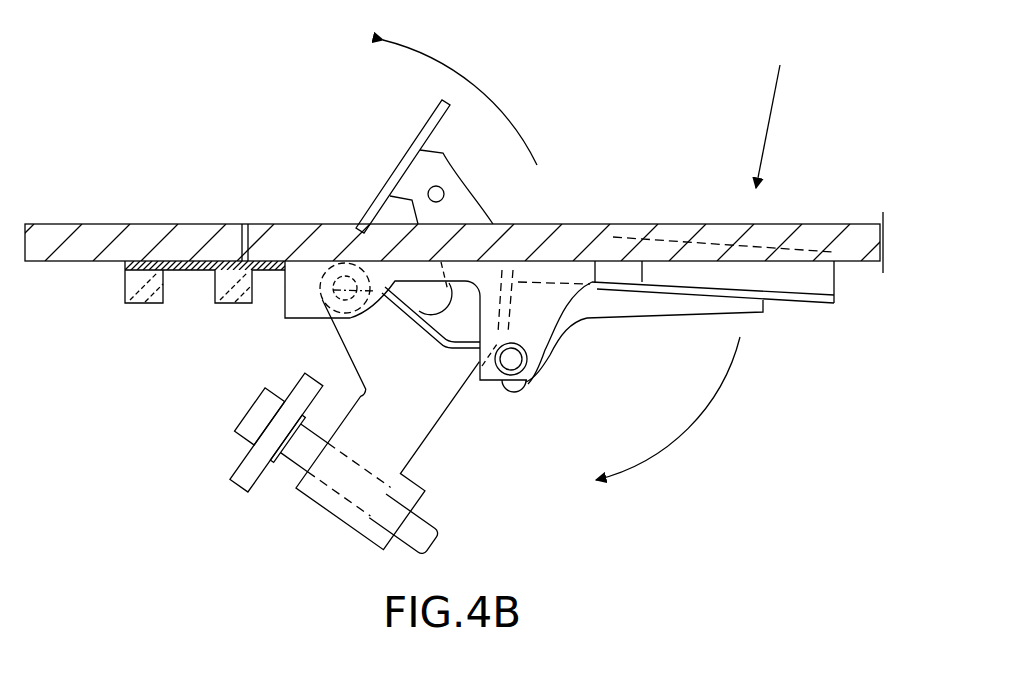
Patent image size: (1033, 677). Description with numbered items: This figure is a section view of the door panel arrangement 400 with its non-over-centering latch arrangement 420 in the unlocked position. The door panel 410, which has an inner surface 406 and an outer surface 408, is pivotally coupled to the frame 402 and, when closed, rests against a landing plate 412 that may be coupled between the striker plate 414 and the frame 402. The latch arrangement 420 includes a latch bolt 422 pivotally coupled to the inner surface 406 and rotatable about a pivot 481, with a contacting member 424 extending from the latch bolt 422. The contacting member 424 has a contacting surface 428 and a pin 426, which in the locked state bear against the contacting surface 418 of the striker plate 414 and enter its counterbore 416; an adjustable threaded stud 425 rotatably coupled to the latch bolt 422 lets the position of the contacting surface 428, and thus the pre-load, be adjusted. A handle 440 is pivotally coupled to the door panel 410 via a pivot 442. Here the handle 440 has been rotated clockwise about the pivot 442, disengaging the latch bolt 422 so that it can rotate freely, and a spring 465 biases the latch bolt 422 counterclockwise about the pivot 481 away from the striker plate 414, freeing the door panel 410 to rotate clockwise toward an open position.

The door panel arrangement 400 is at (566, 120).
The frame 402 is at (96, 232).
The inner surface 406 is at (547, 268).
The outer surface 408 is at (500, 224).
The door panel 410 is at (582, 224).
The landing plate 412 is at (272, 272).
The striker plate 414 is at (125, 289).
The counterbore 416 is at (214, 278).
The contacting surface 418 is at (237, 307).
The non-over-centering latch arrangement 420 is at (664, 474).
The latch bolt 422 is at (437, 410).
The contacting member 424 is at (245, 478).
The adjustable threaded stud 425 is at (422, 522).
The pin 426 is at (243, 418).
The contacting surface 428 is at (228, 470).
The handle 440 is at (620, 300).
The pivot 442 is at (511, 361).
The spring 465 is at (443, 340).
The pivot 481 is at (346, 290).